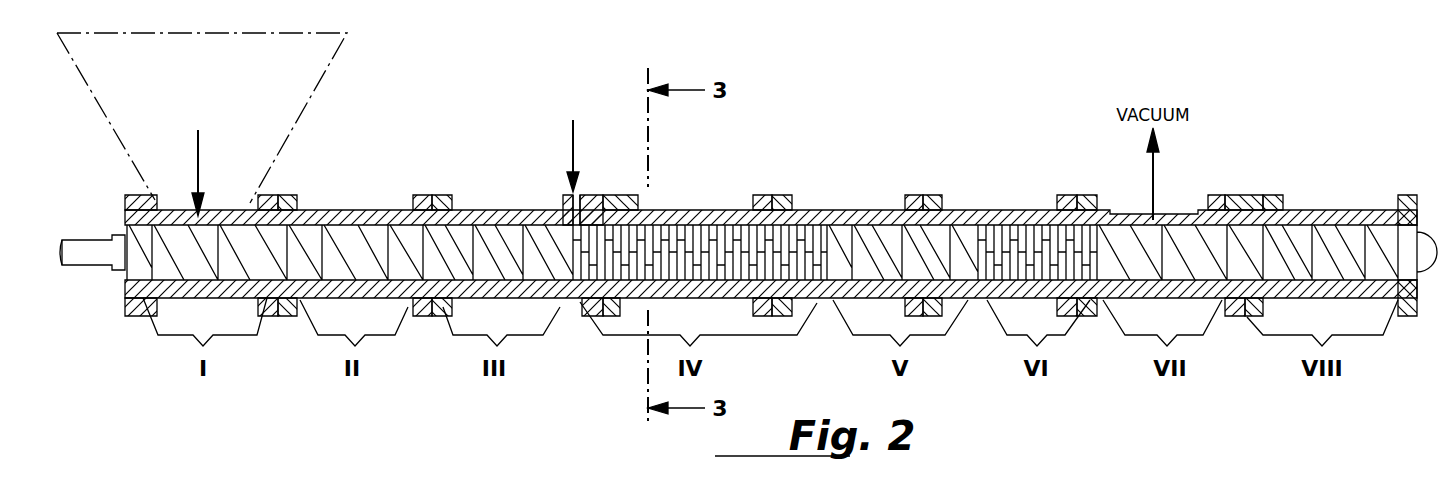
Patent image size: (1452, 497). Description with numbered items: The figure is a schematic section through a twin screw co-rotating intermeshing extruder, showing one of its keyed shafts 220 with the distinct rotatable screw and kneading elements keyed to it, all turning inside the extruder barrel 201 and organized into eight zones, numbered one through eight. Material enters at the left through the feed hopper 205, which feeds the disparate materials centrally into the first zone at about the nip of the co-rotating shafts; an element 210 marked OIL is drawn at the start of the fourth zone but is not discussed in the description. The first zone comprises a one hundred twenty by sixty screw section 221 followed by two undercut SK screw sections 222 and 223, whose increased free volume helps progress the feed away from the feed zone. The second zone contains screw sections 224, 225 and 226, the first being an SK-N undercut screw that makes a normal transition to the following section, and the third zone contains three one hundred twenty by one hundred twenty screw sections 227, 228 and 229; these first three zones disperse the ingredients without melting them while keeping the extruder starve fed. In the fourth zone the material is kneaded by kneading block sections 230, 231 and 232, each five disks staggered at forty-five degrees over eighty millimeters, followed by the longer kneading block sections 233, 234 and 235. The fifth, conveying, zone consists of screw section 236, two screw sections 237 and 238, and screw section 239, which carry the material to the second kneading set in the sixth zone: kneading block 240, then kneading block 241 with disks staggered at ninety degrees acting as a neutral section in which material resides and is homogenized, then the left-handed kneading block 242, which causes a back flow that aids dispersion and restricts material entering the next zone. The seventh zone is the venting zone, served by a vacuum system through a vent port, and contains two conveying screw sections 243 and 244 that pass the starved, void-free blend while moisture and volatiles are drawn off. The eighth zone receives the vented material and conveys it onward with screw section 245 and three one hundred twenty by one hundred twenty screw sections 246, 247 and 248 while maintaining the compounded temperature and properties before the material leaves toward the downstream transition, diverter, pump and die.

The extruder barrel 201 is at (380, 211).
The feed hopper 205 is at (317, 88).
The oil inlet 210 is at (571, 208).
The keyed shaft 220 is at (93, 250).
The screw section 221 is at (140, 238).
The screw section 222 is at (176, 238).
The screw section 223 is at (240, 238).
The screw section 224 is at (306, 235).
The screw section 225 is at (345, 235).
The screw section 226 is at (407, 240).
The screw section 227 is at (461, 235).
The screw section 228 is at (515, 235).
The screw section 229 is at (543, 238).
The kneading block section 230 is at (591, 235).
The kneading block section 231 is at (646, 235).
The kneading block section 232 is at (665, 235).
The kneading block section 233 is at (700, 235).
The kneading block section 234 is at (742, 235).
The kneading block section 235 is at (800, 235).
The screw section 236 is at (838, 238).
The screw section 237 is at (870, 240).
The screw section 238 is at (926, 245).
The screw section 239 is at (966, 237).
The kneading block section 240 is at (993, 237).
The kneading block section 241 is at (1037, 237).
The left-handed kneading block section 242 is at (1081, 240).
The conveying screw section 243 is at (1125, 240).
The conveying screw section 244 is at (1185, 243).
The screw section 245 is at (1250, 237).
The screw section 246 is at (1290, 240).
The screw section 247 is at (1340, 240).
The screw section 248 is at (1380, 240).